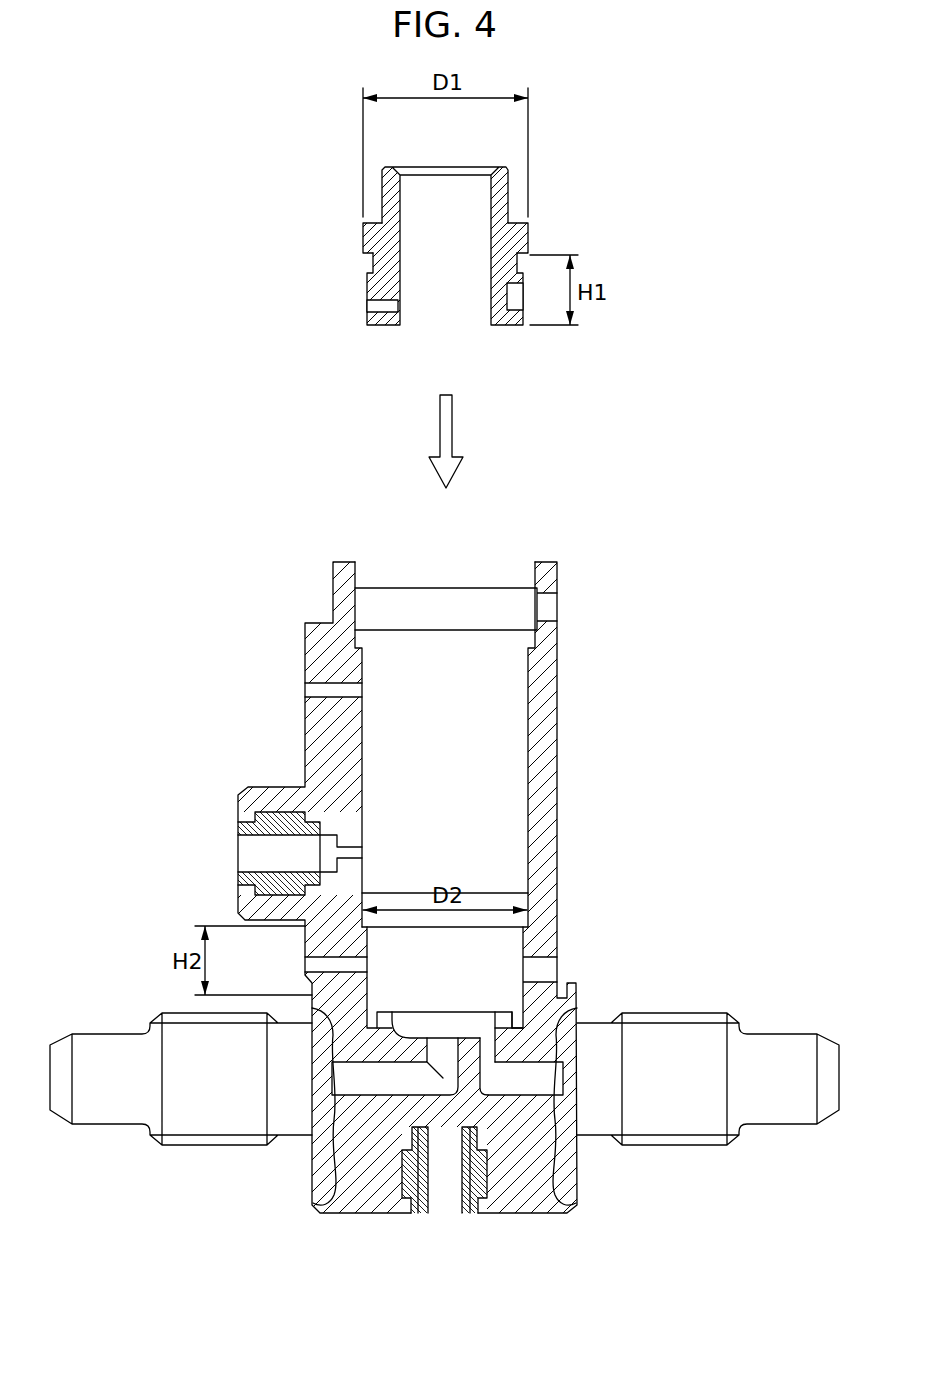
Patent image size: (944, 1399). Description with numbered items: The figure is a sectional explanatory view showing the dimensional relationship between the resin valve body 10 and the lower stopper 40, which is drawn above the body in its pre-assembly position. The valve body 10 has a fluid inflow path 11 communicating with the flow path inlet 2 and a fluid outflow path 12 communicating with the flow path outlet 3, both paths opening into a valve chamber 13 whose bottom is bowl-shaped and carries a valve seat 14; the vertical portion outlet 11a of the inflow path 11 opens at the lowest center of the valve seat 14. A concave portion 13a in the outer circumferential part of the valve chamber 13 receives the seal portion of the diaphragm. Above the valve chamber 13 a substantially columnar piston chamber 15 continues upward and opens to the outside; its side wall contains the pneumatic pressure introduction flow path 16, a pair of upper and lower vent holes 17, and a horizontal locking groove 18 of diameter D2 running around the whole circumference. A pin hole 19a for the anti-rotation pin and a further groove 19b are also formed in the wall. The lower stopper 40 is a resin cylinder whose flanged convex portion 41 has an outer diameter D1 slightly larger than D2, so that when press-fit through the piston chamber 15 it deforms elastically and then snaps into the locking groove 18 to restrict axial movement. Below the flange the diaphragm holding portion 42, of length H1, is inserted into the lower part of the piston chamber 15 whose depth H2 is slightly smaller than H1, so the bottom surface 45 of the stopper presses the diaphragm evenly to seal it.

The flow path inlet 2 is at (55, 1033).
The flow path outlet 3 is at (832, 1040).
The valve body 10 is at (351, 1220).
The fluid inflow path 11 is at (360, 1087).
The vertical portion outlet 11a is at (443, 1033).
The fluid outflow path 12 is at (535, 1082).
The valve chamber 13 is at (474, 1025).
The concave portion 13a is at (520, 1025).
The valve seat 14 is at (408, 1030).
The piston chamber 15 is at (498, 760).
The pneumatic pressure introduction flow path 16 is at (362, 851).
The vent holes 17 is at (314, 690).
The locking groove 18 is at (518, 893).
The pin hole 19a is at (548, 970).
The upper groove 19b is at (548, 604).
The lower stopper 40 is at (511, 196).
The flanged convex portion 41 is at (531, 233).
The diaphragm holding portion 42 is at (517, 327).
The bottom surface 45 is at (376, 327).